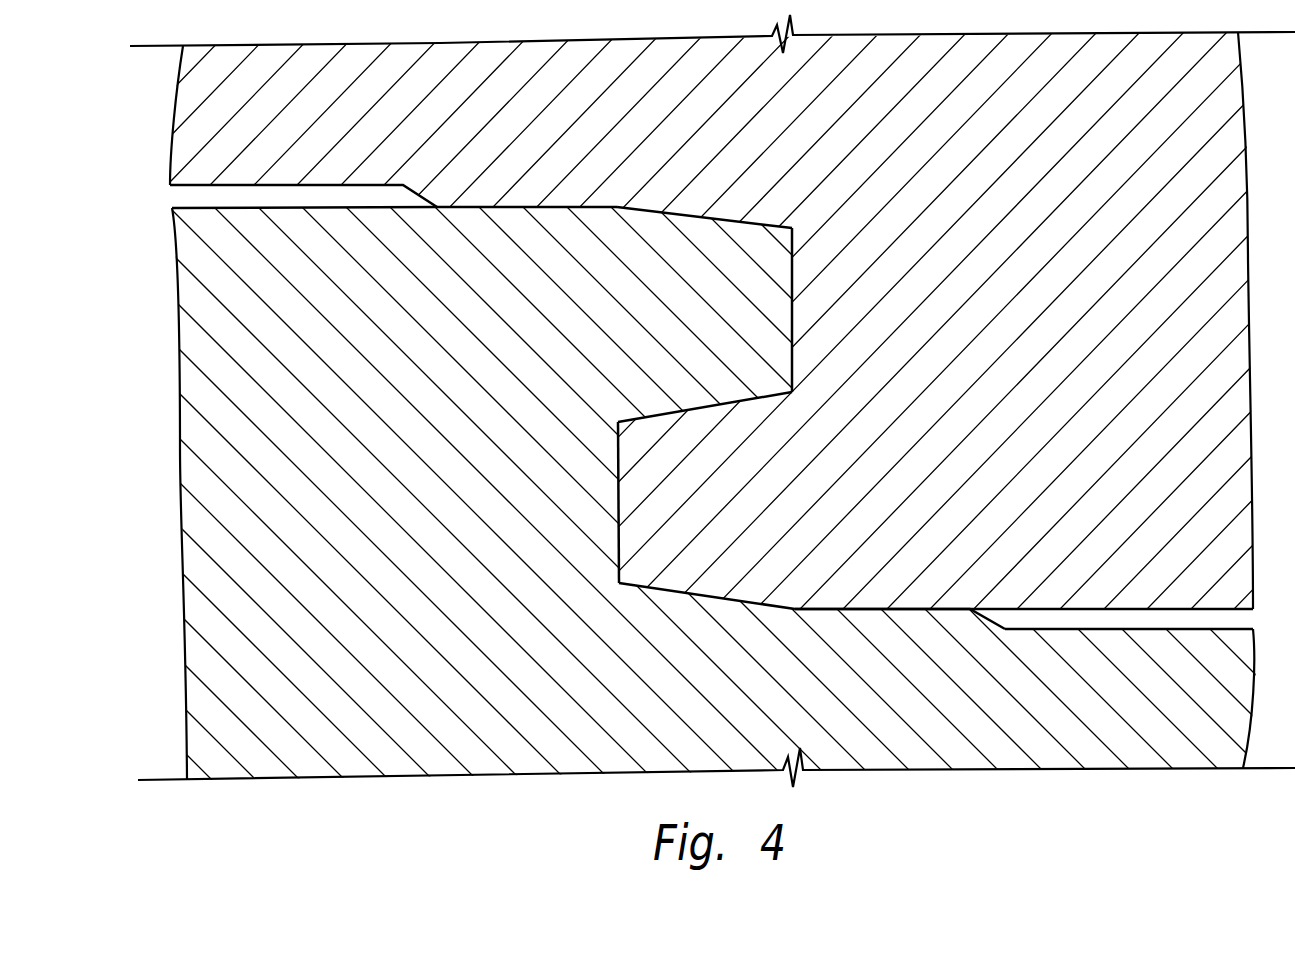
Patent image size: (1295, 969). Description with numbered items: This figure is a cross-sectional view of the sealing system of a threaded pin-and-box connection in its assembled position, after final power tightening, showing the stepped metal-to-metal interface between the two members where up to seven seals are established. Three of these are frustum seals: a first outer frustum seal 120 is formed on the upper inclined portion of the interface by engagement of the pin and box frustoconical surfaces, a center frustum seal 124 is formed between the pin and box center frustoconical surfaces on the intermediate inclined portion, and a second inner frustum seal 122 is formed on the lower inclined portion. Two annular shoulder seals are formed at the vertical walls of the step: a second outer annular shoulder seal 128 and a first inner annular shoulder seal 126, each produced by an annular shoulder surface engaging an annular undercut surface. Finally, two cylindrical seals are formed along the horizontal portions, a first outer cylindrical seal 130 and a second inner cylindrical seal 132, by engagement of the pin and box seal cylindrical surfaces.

The first outer frustum seal 120 is at (704, 218).
The second inner frustum seal 122 is at (702, 596).
The center frustum seal 124 is at (708, 407).
The first inner annular shoulder seal 126 is at (618, 486).
The second outer annular shoulder seal 128 is at (794, 308).
The first outer cylindrical seal 130 is at (525, 205).
The second inner cylindrical seal 132 is at (873, 611).